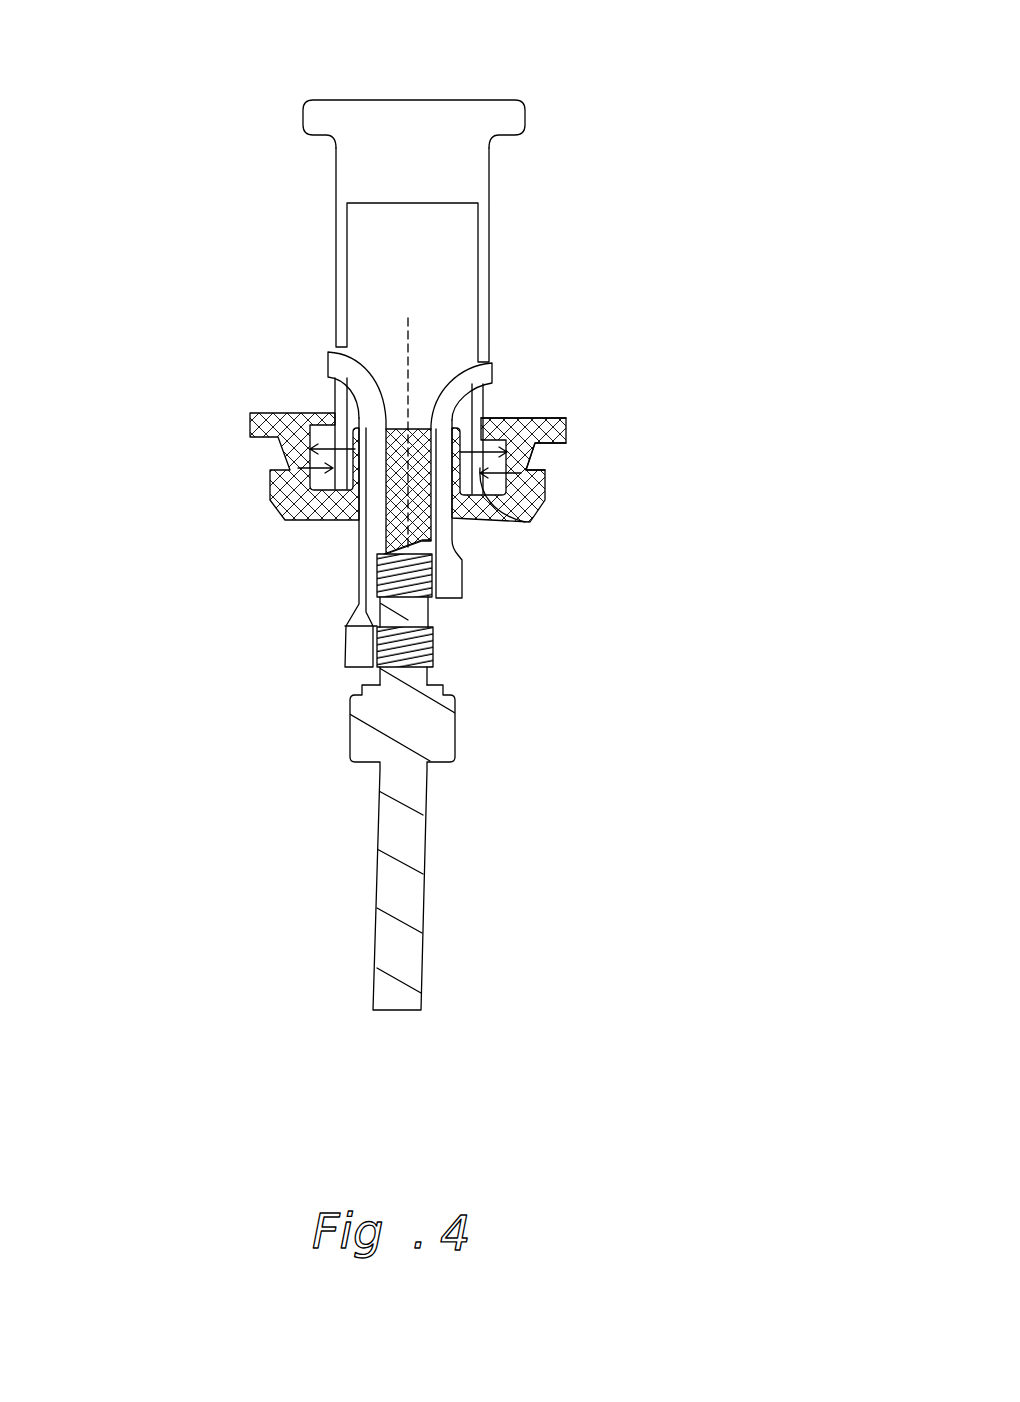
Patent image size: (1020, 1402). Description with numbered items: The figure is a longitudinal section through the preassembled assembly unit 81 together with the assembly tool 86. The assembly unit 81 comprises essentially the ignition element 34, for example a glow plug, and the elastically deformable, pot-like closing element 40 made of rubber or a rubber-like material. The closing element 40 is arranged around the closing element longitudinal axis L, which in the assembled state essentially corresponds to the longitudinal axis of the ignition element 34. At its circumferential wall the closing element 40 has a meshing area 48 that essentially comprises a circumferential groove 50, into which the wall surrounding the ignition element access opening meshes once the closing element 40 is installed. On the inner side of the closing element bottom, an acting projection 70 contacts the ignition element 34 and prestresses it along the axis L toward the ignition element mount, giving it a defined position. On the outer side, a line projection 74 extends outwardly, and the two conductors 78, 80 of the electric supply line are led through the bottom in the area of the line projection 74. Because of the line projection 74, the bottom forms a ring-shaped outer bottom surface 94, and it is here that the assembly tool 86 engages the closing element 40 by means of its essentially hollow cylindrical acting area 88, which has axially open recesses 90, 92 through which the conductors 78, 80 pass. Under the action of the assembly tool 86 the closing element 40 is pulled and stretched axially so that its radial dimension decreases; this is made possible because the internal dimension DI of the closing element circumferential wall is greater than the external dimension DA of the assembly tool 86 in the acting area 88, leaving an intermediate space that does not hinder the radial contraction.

The preassembled assembly unit 81 is at (371, 505).
The assembly tool 86 is at (482, 97).
The acting area 88 is at (489, 299).
The line projection 74 is at (400, 428).
The conductor 78 is at (342, 398).
The conductor 80 is at (498, 374).
The axially open recess 90 is at (341, 398).
The outer bottom surface 94 is at (332, 492).
The acting projection 70 is at (422, 541).
The ignition element 34 is at (455, 751).
The meshing area 48 is at (229, 502).
The axially open recess 92 is at (606, 448).
The closing element 40 is at (532, 419).
The circumferential groove 50 is at (548, 460).
The closing element longitudinal axis L is at (412, 342).
The internal dimension DI is at (249, 419).
The external dimension DA is at (502, 514).